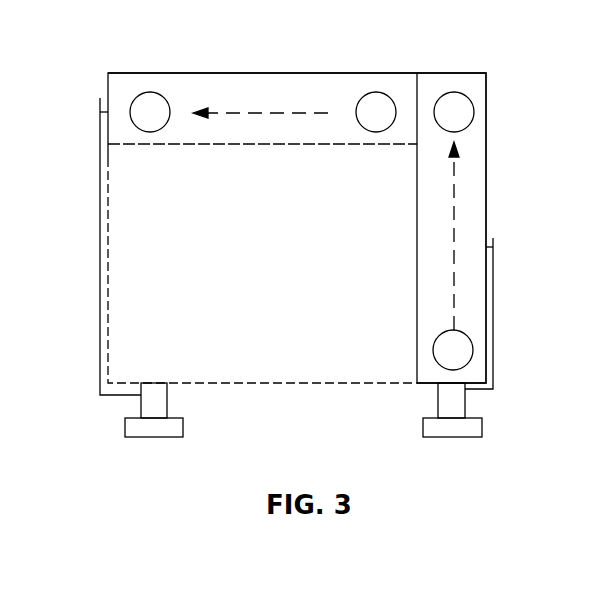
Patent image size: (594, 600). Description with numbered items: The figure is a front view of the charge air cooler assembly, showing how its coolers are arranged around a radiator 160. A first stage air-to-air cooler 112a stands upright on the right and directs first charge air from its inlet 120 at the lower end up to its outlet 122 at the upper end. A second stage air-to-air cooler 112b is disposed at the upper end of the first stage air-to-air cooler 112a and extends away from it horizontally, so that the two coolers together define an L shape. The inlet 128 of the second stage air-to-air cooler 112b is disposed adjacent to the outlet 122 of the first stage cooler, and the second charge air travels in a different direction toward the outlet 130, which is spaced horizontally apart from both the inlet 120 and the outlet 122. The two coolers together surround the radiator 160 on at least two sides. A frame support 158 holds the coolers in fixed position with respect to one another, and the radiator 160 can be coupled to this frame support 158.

The first stage air-to-air cooler 112a is at (487, 134).
The second stage air-to-air cooler 112b is at (218, 74).
The inlet of the first stage air-to-air cooler 120 is at (433, 350).
The outlet of the first stage air-to-air cooler 122 is at (468, 100).
The inlet of the second stage air-to-air cooler 128 is at (390, 97).
The outlet of the second stage air-to-air cooler 130 is at (155, 92).
The frame support 158 is at (100, 213).
The radiator 160 is at (372, 170).